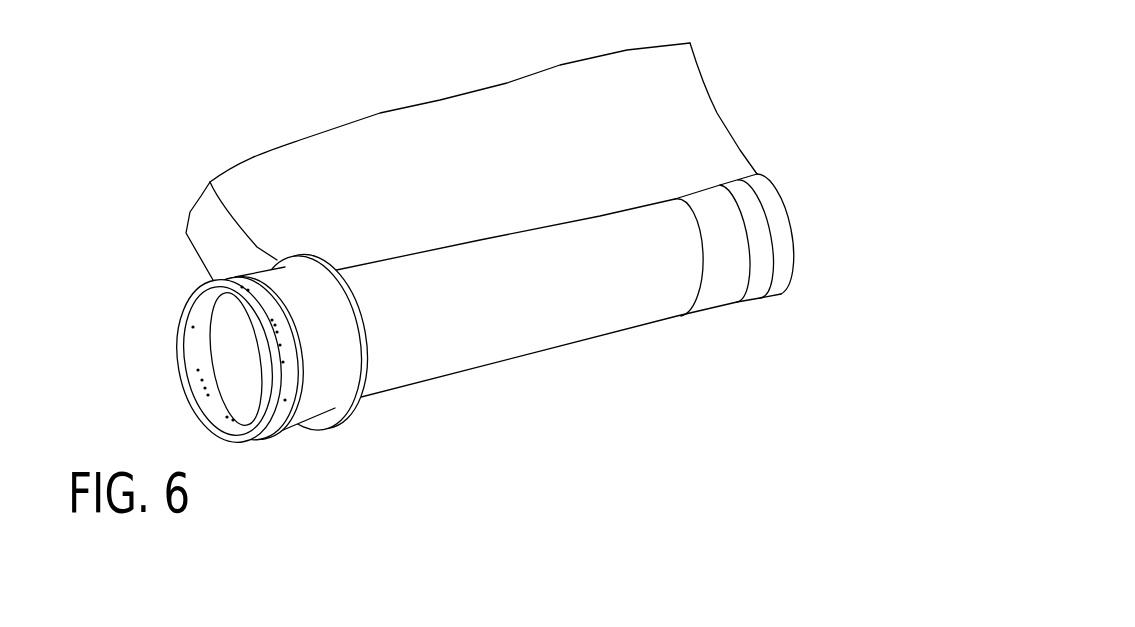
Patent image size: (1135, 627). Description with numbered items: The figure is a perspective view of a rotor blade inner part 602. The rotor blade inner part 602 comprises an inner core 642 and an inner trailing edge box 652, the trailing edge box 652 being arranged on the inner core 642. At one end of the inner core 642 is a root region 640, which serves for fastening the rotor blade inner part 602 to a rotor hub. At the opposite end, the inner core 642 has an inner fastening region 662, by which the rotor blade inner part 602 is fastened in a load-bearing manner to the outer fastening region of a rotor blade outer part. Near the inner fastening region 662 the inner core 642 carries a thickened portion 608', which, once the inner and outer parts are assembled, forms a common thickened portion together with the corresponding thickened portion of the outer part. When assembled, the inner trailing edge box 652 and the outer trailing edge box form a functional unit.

The inner trailing edge box 652 is at (798, 84).
The rotor blade inner part 602 is at (866, 274).
The root region 640 is at (130, 287).
The inner core 642 is at (708, 378).
The thickened portion 608' is at (788, 236).
The inner fastening region 662 is at (803, 310).